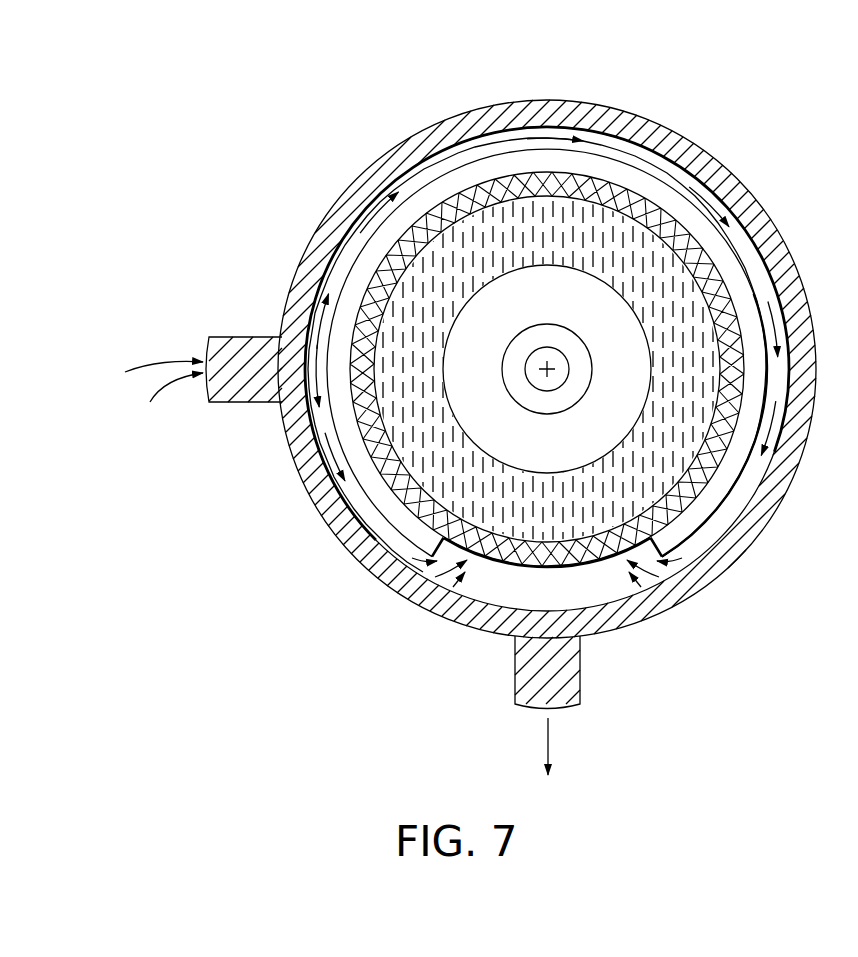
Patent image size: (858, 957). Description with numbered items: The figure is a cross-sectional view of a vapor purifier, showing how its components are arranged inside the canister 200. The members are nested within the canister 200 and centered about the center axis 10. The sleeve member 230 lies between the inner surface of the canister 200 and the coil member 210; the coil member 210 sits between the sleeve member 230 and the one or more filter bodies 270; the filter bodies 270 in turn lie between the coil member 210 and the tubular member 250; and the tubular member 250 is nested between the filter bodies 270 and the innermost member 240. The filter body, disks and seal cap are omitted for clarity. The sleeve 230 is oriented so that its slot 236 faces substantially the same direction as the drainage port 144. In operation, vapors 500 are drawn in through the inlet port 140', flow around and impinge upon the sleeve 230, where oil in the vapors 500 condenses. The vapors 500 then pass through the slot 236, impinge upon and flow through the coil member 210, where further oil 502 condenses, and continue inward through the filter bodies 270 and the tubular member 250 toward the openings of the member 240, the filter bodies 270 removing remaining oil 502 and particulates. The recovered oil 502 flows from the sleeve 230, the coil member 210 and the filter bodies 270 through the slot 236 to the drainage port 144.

The canister 200 is at (367, 187).
The sleeve member 230 is at (437, 195).
The coil member 210 is at (527, 170).
The filter bodies 270 is at (567, 225).
The tubular member 250 is at (577, 303).
The member 240 is at (590, 367).
The center axis 10 is at (540, 370).
The inlet port 140' is at (231, 303).
The drainage port 144 is at (530, 664).
The vapors 500 is at (703, 633).
The slot 236 is at (563, 587).
The oil 502 is at (567, 740).